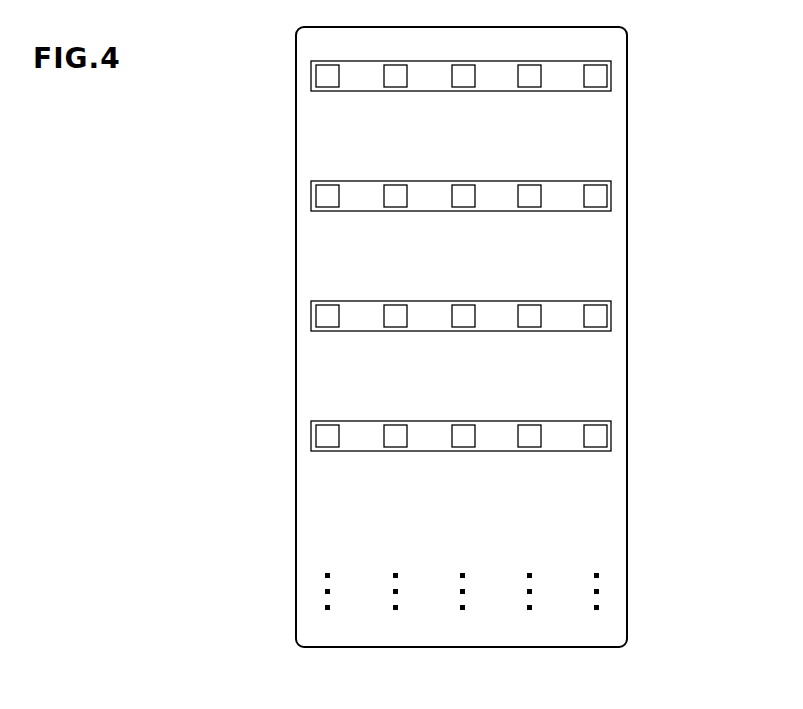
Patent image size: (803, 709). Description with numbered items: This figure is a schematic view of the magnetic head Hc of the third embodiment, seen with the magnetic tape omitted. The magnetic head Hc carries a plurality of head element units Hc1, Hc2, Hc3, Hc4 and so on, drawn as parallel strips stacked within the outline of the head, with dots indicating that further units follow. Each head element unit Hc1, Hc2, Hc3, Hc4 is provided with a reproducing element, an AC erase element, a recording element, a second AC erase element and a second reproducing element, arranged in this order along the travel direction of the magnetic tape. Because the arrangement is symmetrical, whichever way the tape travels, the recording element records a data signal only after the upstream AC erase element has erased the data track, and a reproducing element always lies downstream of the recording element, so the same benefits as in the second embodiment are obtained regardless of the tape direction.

The magnetic head Hc is at (647, 67).
The head element unit Hc1 is at (311, 77).
The head element unit Hc2 is at (311, 197).
The head element unit Hc3 is at (311, 317).
The head element unit Hc4 is at (311, 437).